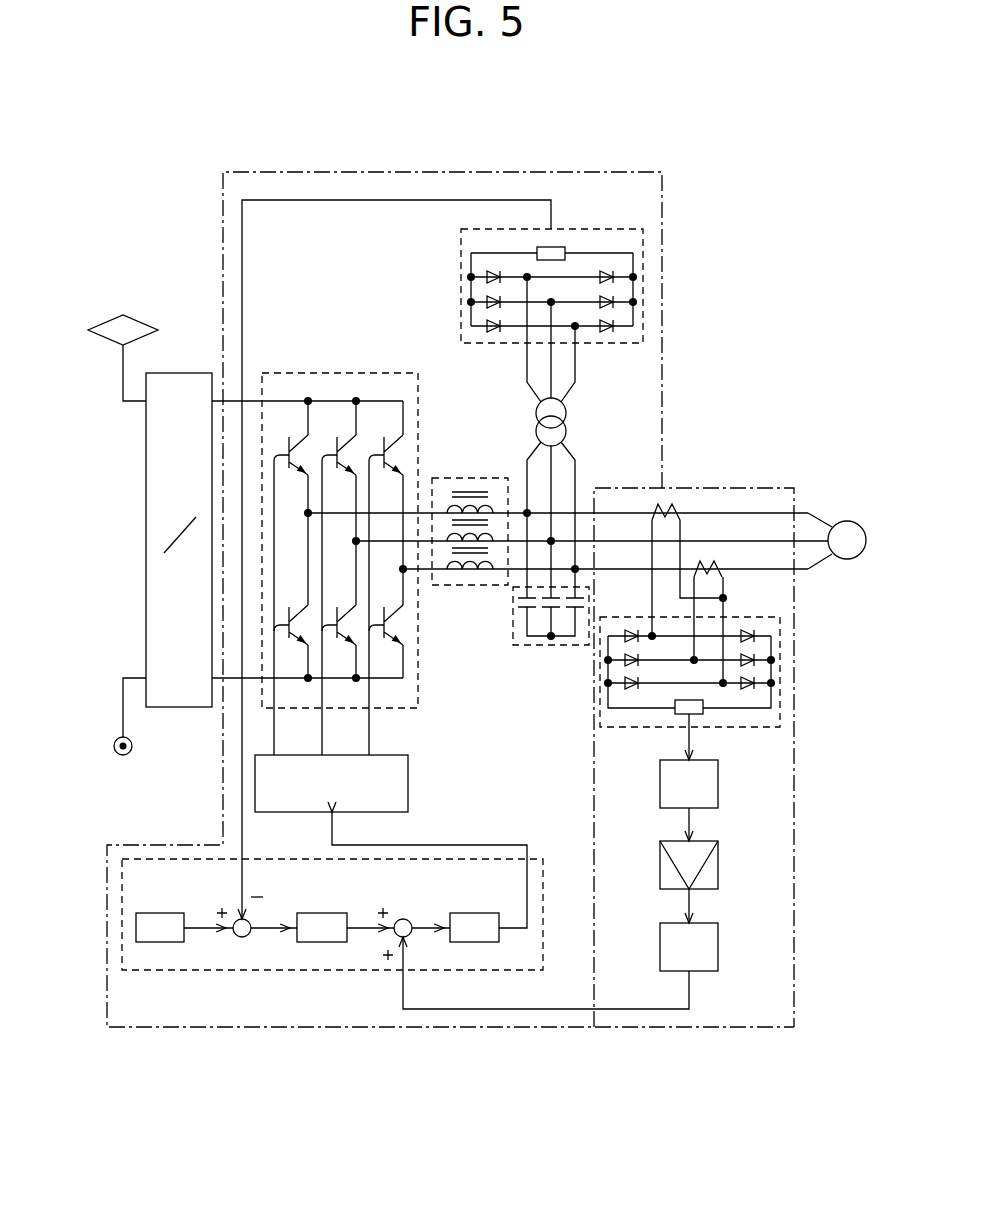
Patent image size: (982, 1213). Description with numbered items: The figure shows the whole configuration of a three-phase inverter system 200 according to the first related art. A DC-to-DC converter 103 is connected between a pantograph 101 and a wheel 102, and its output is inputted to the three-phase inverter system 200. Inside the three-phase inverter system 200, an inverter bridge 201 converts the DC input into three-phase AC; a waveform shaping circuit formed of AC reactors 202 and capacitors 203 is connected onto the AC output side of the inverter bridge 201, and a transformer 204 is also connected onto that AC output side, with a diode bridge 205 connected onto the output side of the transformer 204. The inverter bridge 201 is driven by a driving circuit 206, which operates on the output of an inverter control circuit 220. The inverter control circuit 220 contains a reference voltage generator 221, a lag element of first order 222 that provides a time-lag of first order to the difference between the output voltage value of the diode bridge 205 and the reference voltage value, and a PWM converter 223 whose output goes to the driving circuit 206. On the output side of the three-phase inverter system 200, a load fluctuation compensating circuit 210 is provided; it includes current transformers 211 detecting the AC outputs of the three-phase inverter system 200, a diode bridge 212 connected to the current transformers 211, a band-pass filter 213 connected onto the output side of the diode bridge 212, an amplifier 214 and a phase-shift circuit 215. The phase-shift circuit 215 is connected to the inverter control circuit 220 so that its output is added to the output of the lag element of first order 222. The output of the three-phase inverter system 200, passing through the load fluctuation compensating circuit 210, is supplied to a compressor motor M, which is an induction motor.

The pantograph 101 is at (108, 313).
The wheel 102 is at (114, 763).
The DC-to-DC converter 103 is at (183, 697).
The three-phase inverter system 200 is at (352, 170).
The inverter bridge 201 is at (325, 368).
The AC reactors 202 is at (472, 473).
The capacitors 203 is at (520, 647).
The transformer 204 is at (573, 417).
The diode bridge 205 is at (460, 275).
The driving circuit 206 is at (400, 777).
The load fluctuation compensating circuit 210 is at (787, 487).
The current transformers 211 is at (720, 567).
The diode bridge 212 is at (780, 678).
The band-pass filter 213 is at (708, 786).
The amplifier 214 is at (708, 874).
The phase-shift circuit 215 is at (708, 953).
The inverter control circuit 220 is at (176, 972).
The reference voltage generator 221 is at (154, 912).
The lag element of first order 222 is at (321, 912).
The PWM converter 223 is at (472, 912).
The compressor motor M is at (850, 558).